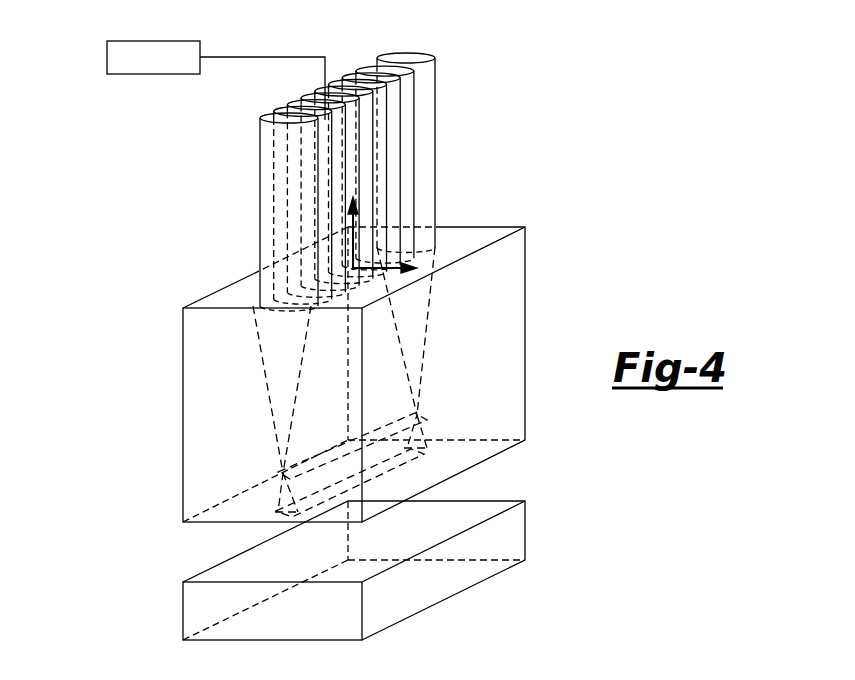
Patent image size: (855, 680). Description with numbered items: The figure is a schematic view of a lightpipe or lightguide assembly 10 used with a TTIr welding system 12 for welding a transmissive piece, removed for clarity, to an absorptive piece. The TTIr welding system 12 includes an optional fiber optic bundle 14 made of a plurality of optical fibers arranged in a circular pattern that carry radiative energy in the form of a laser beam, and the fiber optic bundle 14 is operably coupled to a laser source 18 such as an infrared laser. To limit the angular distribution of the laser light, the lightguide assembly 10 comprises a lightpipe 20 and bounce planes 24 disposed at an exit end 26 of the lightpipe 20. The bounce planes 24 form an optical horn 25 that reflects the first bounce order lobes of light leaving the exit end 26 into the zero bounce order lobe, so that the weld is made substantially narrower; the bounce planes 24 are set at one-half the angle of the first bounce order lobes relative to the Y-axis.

The lightpipe or lightguide assembly 10 is at (156, 354).
The TTIr welding system 12 is at (547, 205).
The fiber optic bundle 14 is at (260, 186).
The laser source 18 is at (107, 58).
The lightpipe 20 is at (267, 402).
The bounce planes 24 is at (296, 515).
The optical horn 25 is at (383, 463).
The exit end 26 is at (280, 472).